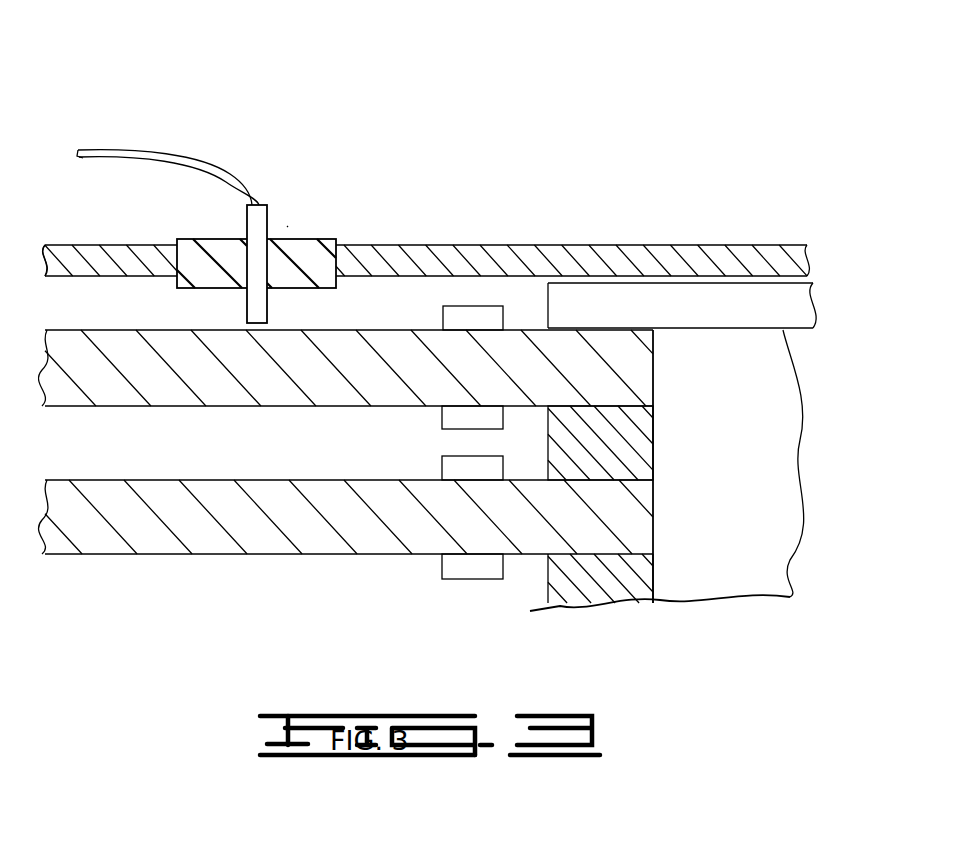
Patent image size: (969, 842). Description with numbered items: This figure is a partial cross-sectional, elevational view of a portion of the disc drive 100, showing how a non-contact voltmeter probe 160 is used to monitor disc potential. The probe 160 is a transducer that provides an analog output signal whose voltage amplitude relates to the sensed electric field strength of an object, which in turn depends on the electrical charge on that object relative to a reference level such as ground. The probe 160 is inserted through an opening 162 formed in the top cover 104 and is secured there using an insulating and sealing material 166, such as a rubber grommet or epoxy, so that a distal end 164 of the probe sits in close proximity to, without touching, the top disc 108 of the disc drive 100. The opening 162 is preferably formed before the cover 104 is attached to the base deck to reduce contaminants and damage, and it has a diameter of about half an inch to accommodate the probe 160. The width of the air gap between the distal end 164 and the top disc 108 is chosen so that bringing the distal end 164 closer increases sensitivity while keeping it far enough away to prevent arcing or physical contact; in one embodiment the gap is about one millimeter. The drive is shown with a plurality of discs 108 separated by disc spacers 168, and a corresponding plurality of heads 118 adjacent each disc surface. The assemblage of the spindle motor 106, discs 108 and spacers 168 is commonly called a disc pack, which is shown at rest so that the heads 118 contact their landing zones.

The disc drive 100 is at (175, 73).
The top cover 104 is at (660, 243).
The spindle motor 106 is at (727, 560).
The disc 108 is at (60, 390).
The head 118 is at (453, 317).
The non-contact voltmeter probe 160 is at (263, 170).
The opening 162 is at (287, 227).
The distal end 164 is at (248, 318).
The insulating and sealing material 166 is at (227, 252).
The disc spacer 168 is at (625, 437).